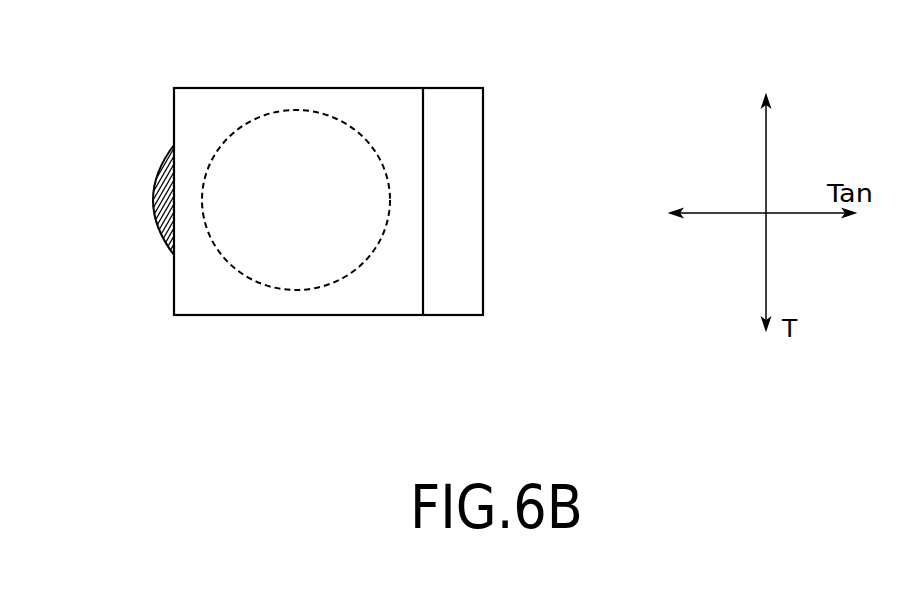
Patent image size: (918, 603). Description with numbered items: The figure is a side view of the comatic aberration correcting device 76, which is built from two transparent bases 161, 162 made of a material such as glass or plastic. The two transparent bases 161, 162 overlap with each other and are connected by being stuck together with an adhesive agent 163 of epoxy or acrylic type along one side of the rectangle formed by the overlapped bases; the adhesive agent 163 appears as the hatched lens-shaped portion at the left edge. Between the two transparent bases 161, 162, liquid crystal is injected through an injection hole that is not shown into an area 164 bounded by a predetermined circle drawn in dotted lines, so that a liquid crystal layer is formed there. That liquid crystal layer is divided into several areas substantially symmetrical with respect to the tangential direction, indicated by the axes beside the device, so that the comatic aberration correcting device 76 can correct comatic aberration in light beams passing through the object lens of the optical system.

The comatic aberration correcting device 76 is at (497, 49).
The transparent base 161 is at (475, 192).
The transparent base 162 is at (385, 300).
The adhesive agent 163 is at (157, 185).
The area 164 is at (340, 123).